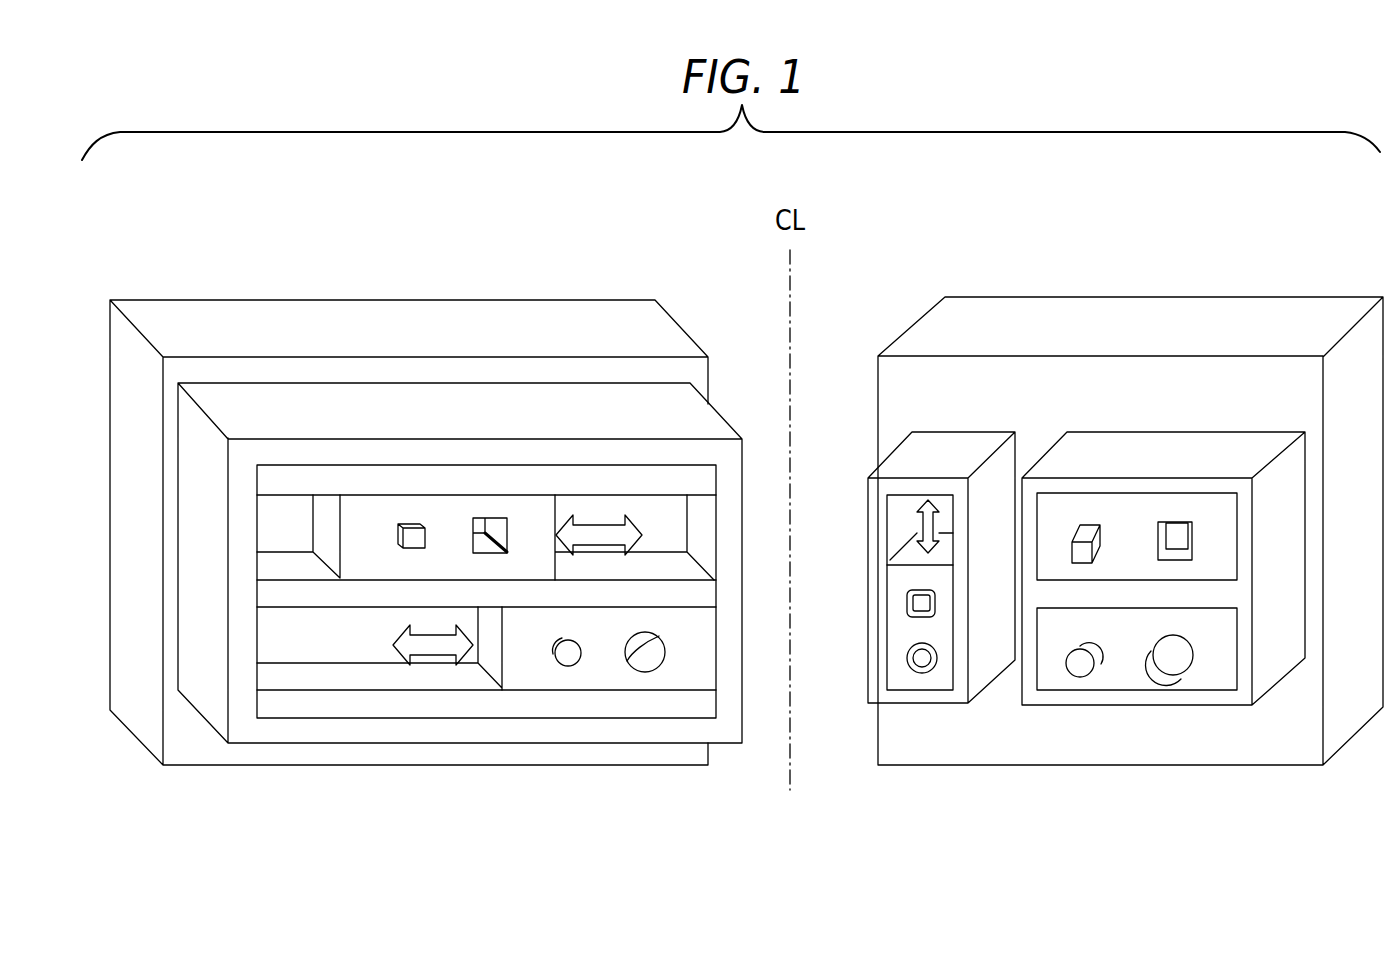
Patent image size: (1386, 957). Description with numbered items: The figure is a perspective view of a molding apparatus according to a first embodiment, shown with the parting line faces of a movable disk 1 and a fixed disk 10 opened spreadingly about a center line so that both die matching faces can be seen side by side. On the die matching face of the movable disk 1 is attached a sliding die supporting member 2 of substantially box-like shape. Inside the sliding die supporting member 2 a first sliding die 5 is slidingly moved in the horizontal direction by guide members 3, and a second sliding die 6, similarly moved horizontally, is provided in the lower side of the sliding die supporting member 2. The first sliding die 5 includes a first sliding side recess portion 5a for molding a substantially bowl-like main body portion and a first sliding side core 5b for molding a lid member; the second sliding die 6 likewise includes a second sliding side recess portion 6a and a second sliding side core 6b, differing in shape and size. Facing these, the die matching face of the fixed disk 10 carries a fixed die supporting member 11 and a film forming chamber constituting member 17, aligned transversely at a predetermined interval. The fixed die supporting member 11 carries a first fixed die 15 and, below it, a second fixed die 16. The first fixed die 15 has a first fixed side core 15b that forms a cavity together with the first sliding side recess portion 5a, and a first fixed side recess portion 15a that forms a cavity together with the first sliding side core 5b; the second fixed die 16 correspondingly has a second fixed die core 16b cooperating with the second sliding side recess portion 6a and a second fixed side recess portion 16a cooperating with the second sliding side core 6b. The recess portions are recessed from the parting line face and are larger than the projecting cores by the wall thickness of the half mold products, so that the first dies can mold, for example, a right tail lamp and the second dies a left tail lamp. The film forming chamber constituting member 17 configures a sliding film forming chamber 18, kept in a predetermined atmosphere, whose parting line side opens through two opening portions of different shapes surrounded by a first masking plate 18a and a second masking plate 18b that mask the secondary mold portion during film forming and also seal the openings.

The movable disk 1 is at (311, 323).
The sliding die supporting member 2 is at (610, 403).
The guide members 3 is at (275, 481).
The first sliding die 5 is at (353, 508).
The first sliding side recess portion 5a is at (492, 517).
The first sliding side core 5b is at (413, 523).
The second sliding die 6 is at (530, 677).
The second sliding side recess portion 6a is at (645, 672).
The second sliding side core 6b is at (568, 667).
The fixed disk 10 is at (990, 323).
The fixed die supporting member 11 is at (1065, 453).
The first fixed die 15 is at (1102, 507).
The first fixed side recess portion 15a is at (1193, 535).
The first fixed side core 15b is at (1105, 540).
The second fixed die 16 is at (1060, 700).
The second fixed side recess portion 16a is at (1207, 700).
The second fixed die core 16b is at (1113, 700).
The film forming chamber constituting member 17 is at (915, 453).
The sliding film forming chamber 18 is at (953, 700).
The first masking plate 18a is at (905, 602).
The second masking plate 18b is at (893, 700).